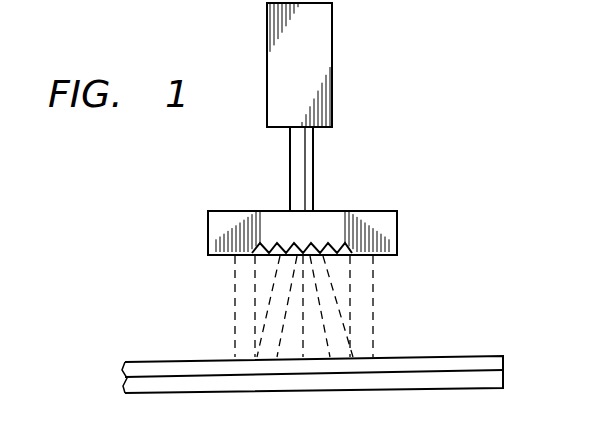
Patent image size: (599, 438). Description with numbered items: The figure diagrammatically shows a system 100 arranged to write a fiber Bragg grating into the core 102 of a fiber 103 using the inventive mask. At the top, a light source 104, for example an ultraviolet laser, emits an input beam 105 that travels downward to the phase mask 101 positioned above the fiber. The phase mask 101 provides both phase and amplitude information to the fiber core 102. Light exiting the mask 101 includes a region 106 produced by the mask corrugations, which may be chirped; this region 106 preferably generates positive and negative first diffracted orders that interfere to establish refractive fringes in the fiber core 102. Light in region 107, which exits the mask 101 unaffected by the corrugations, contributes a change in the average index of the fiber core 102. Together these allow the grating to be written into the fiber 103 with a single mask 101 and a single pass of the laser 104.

The system 100 is at (432, 144).
The phase mask 101 is at (228, 211).
The fiber core 102 is at (476, 368).
The fiber 103 is at (168, 367).
The light source 104 is at (268, 68).
The input beam 105 is at (313, 170).
The region of light resulting from mask corrugations 106 is at (318, 297).
The region of light unaffected by mask corrugations 107 is at (235, 298).